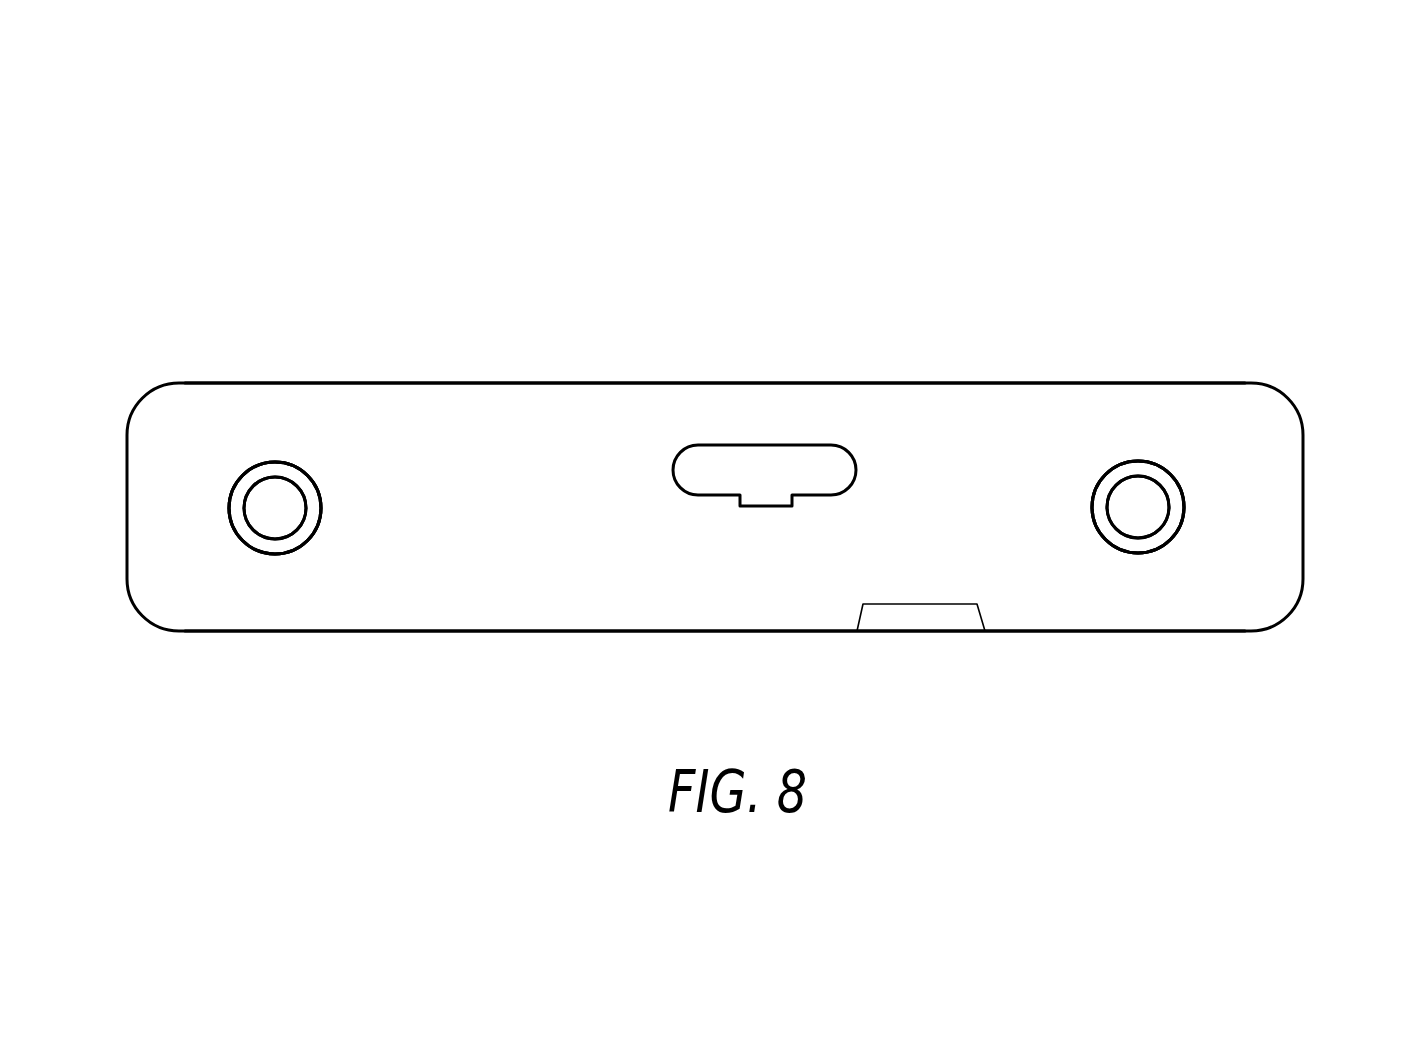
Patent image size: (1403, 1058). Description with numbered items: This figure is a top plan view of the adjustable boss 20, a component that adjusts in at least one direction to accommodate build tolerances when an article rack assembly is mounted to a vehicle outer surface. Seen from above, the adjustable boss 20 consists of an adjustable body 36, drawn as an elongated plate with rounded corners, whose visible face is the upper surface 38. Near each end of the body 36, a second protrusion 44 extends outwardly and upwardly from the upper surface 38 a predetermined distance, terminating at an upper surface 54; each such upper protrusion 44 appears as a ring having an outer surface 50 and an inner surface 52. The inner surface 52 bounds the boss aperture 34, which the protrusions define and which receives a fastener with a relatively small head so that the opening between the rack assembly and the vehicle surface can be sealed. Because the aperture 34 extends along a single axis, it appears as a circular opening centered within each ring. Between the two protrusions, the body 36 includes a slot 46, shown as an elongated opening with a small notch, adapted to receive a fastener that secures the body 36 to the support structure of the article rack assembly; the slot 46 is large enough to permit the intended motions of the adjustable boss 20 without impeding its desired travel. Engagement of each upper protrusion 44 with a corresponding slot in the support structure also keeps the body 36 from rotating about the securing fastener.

The adjustable boss 20 is at (1162, 167).
The boss aperture 34 is at (273, 509).
The adjustable body 36 is at (1000, 427).
The upper surface 38 is at (403, 592).
The second protrusion 44 is at (283, 462).
The slot 46 is at (713, 470).
The outer surface 50 is at (323, 507).
The inner surface 52 is at (253, 492).
The upper surface 54 is at (310, 487).